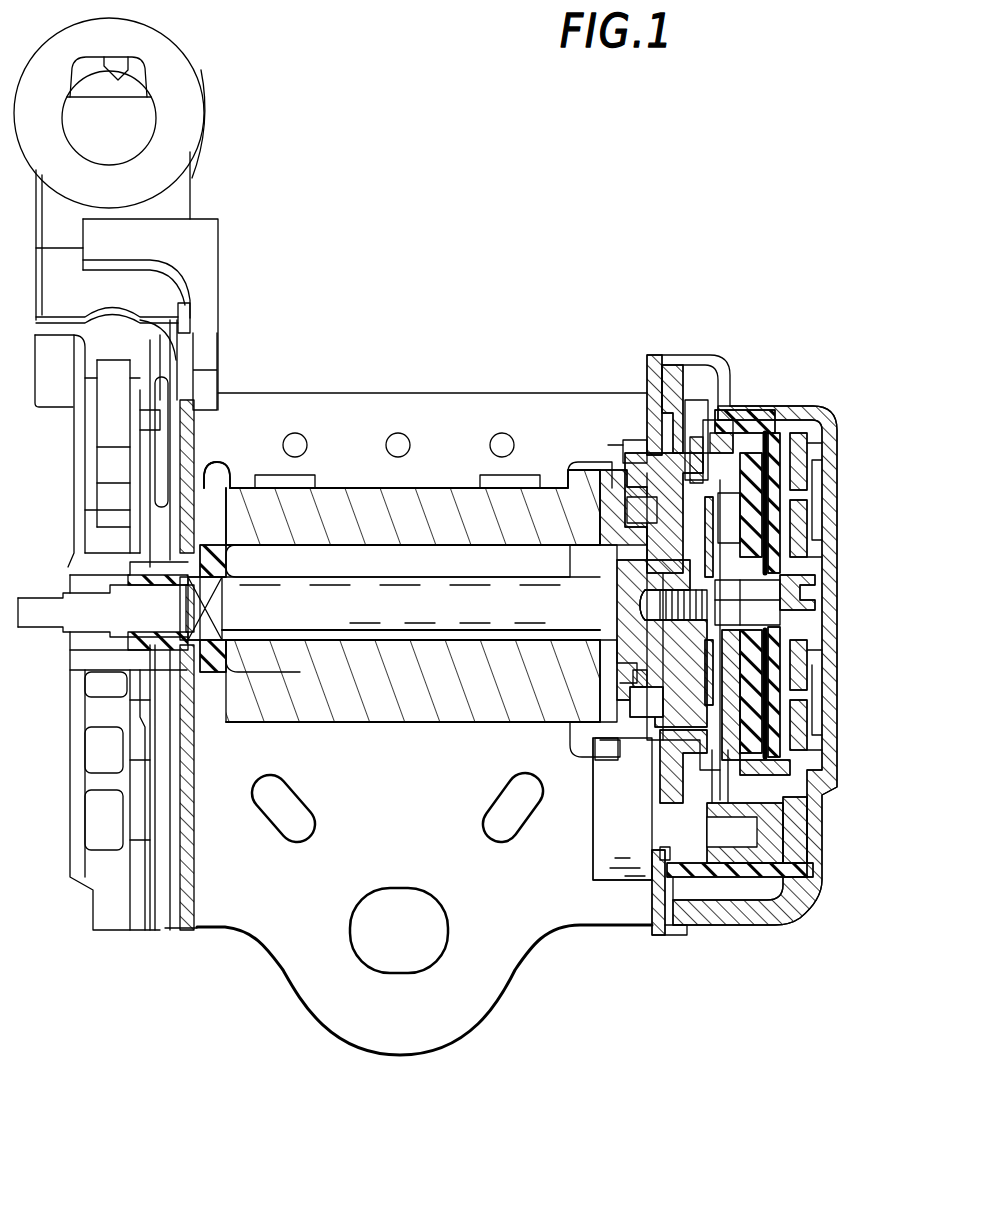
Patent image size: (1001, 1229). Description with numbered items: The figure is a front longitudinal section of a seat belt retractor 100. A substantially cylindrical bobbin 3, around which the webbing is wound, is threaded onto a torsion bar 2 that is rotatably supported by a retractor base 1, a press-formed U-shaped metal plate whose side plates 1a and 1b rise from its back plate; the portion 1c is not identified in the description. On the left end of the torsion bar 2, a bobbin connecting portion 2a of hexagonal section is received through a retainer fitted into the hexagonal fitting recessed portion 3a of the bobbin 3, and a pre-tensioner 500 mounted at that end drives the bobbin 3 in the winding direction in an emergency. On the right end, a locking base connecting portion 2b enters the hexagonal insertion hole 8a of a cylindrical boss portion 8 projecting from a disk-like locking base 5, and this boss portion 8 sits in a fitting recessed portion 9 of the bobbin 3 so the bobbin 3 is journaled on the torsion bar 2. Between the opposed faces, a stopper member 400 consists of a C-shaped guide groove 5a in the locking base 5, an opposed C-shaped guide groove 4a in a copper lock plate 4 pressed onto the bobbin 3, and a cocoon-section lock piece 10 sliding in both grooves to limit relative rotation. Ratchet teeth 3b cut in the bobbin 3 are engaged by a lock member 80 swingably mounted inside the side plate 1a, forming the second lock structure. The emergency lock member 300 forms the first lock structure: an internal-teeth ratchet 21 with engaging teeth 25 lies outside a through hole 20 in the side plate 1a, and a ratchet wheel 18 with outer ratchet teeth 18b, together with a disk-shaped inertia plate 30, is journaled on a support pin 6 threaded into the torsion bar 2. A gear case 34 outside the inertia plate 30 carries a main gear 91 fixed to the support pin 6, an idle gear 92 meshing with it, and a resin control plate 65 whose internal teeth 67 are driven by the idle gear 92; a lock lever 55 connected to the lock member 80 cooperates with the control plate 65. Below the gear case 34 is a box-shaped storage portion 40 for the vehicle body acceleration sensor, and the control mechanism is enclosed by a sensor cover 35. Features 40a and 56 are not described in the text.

The seat belt retractor 100 is at (430, 320).
The pre-tensioner 500 is at (250, 178).
The emergency lock member 300 is at (787, 400).
The retractor base 1 is at (415, 675).
The side plate 1a is at (652, 896).
The side plate 1b is at (195, 885).
The lower portion of base plate 1c is at (492, 978).
The torsion bar 2 is at (327, 680).
The bobbin connecting portion 2a is at (218, 612).
The locking base connecting portion 2b is at (620, 685).
The bobbin 3 is at (412, 615).
The fitting recessed portion 3a is at (212, 540).
The ratchet teeth 3b is at (580, 748).
The lock plate 4 is at (615, 601).
The guide groove 4a is at (630, 720).
The locking base 5 is at (636, 595).
The guide groove 5a is at (627, 770).
The support pin 6 is at (803, 620).
The boss portion 8 is at (575, 470).
The insertion hole 8a is at (610, 578).
The fitting recessed portion 9 is at (597, 598).
The lock piece 10 is at (612, 462).
The ratchet wheel 18 is at (709, 657).
The ratchet teeth 18b is at (672, 930).
The through hole 20 is at (647, 500).
The internal-teeth ratchet 21 is at (692, 380).
The engaging teeth 25 is at (660, 778).
The inertia plate 30 is at (727, 855).
The gear case 34 is at (780, 667).
The sensor cover 35 is at (822, 812).
The storage portion 40 is at (240, 670).
The seal ring 40a is at (220, 582).
The lock lever 55 is at (790, 875).
The gasket 56 is at (722, 880).
The control plate 65 is at (820, 533).
The internal teeth 67 is at (815, 490).
The lock member 80 is at (600, 867).
The main gear 91 is at (820, 600).
The idle gear 92 is at (792, 477).
The stopper member 400 is at (648, 500).